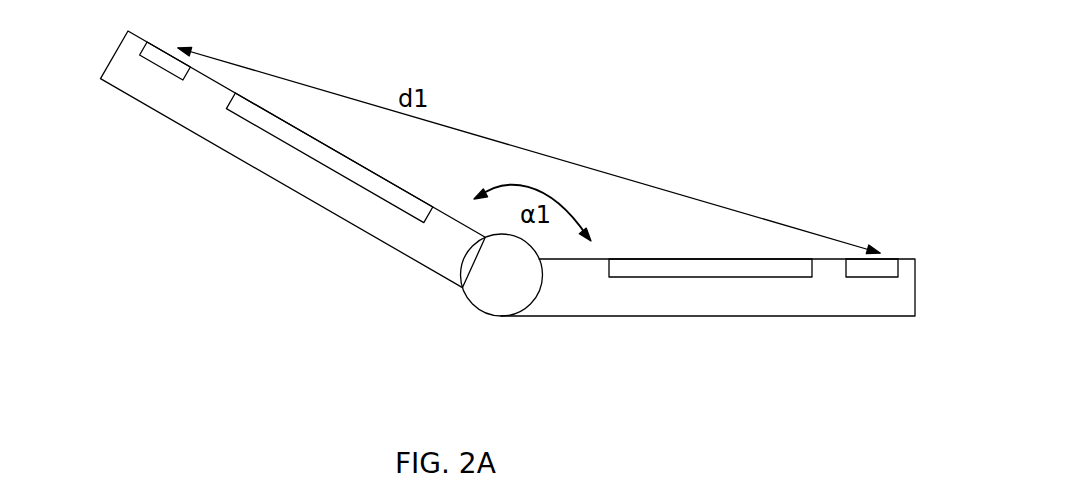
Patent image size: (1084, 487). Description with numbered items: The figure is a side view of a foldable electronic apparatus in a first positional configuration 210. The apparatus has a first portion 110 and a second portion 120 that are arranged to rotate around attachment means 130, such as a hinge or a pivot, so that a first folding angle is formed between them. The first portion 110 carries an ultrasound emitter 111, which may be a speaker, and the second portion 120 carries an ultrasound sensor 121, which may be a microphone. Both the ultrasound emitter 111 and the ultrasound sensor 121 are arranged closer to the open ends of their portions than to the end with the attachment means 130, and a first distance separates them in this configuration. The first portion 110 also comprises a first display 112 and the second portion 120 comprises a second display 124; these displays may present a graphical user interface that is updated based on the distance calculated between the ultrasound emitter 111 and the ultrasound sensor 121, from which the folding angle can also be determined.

The first positional configuration 210 is at (522, 202).
The first portion 110 is at (360, 229).
The ultrasound emitter 111 is at (163, 75).
The first display 112 is at (292, 147).
The attachment means 130 is at (483, 313).
The second portion 120 is at (813, 317).
The second display 124 is at (637, 259).
The ultrasound sensor 121 is at (882, 259).